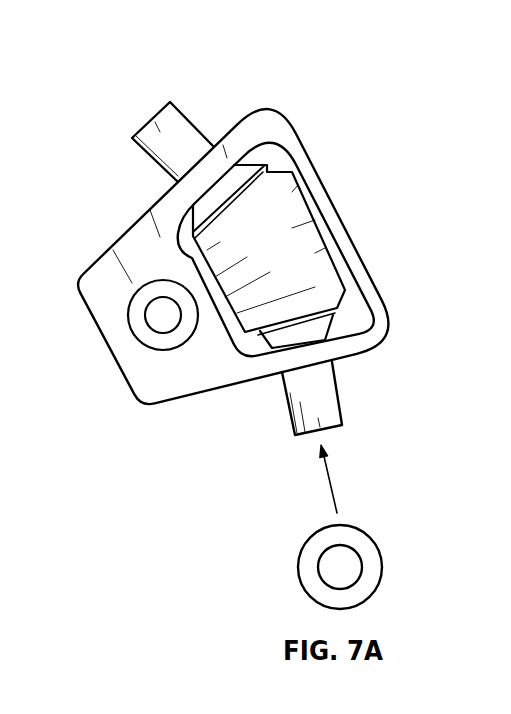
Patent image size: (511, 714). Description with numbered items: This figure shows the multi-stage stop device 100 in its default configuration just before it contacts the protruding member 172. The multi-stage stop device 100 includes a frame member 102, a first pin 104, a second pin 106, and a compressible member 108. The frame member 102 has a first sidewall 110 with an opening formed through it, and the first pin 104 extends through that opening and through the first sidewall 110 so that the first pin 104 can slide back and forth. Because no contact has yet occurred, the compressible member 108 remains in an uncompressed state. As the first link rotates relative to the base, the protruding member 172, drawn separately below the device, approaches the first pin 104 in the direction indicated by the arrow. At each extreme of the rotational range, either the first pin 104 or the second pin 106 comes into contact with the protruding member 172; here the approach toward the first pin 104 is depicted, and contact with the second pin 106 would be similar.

The multi-stage stop device 100 is at (102, 68).
The frame member 102 is at (283, 133).
The first pin 104 is at (322, 395).
The second pin 106 is at (178, 112).
The compressible member 108 is at (312, 222).
The first sidewall 110 is at (363, 333).
The protruding member 172 is at (383, 567).